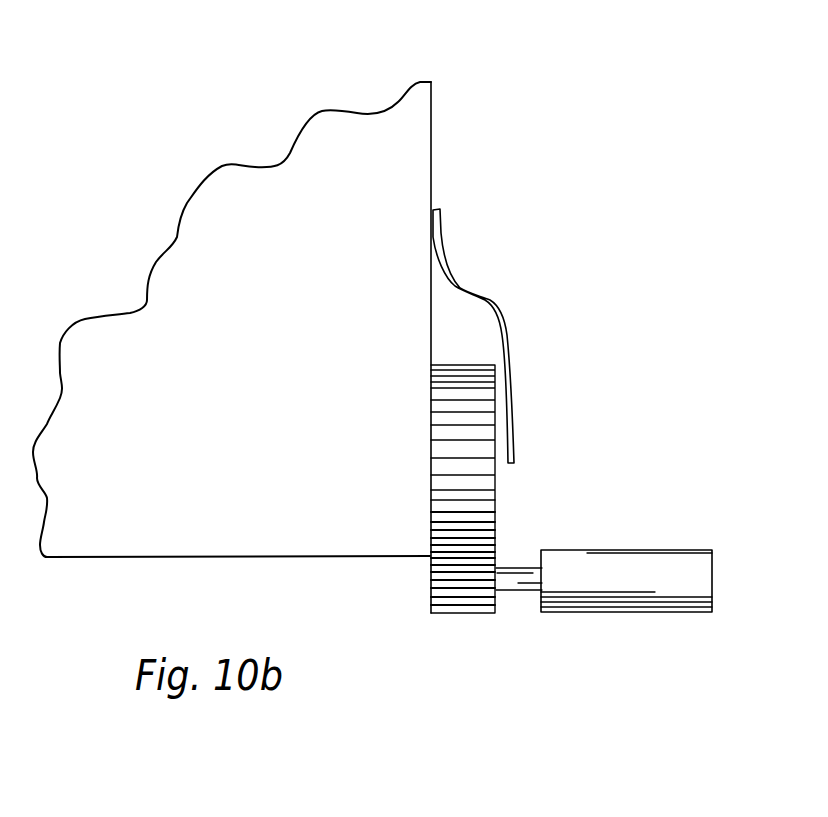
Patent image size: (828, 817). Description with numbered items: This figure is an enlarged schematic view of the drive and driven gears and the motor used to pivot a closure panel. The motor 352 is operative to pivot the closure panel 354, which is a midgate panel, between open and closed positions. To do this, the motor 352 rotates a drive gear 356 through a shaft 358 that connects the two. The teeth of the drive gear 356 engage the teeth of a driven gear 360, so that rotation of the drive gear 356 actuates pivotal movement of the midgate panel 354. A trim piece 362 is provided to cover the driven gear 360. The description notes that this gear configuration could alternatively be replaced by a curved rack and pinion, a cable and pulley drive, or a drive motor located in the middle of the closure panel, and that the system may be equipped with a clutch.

The drive motor 352 is at (597, 613).
The closure panel 354 is at (225, 232).
The drive gear 356 is at (462, 613).
The shaft 358 is at (518, 613).
The driven gear 360 is at (497, 482).
The trim piece 362 is at (511, 357).